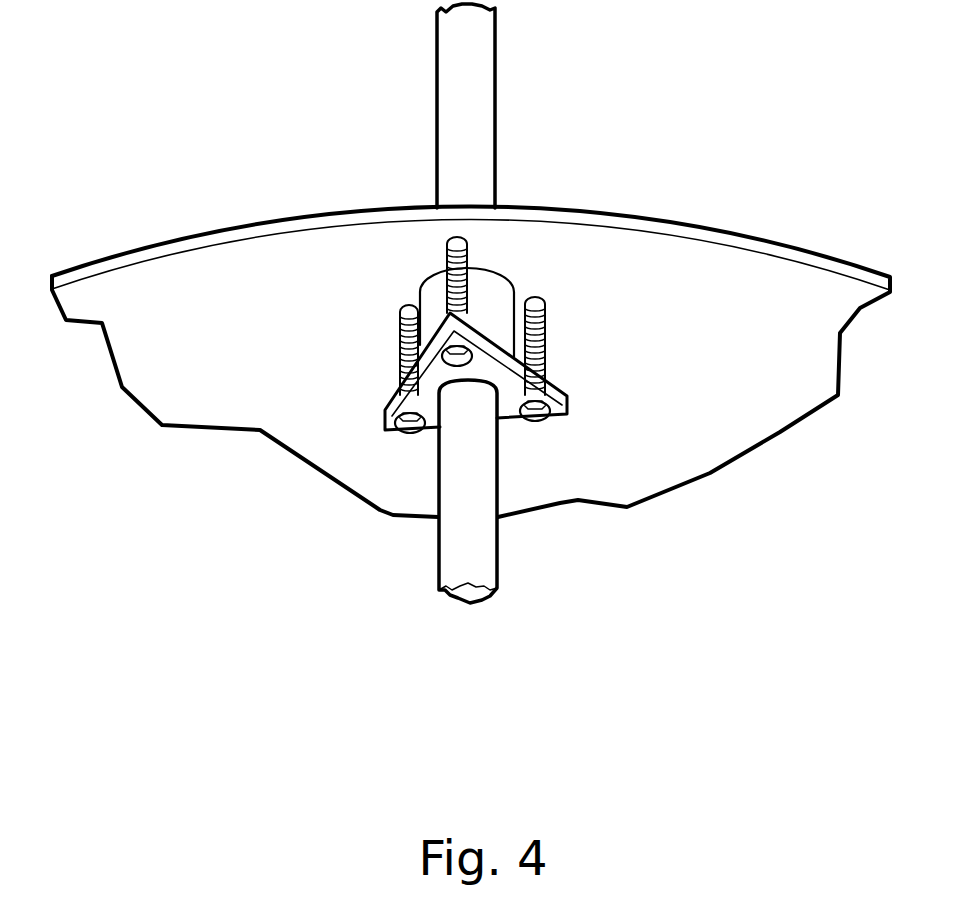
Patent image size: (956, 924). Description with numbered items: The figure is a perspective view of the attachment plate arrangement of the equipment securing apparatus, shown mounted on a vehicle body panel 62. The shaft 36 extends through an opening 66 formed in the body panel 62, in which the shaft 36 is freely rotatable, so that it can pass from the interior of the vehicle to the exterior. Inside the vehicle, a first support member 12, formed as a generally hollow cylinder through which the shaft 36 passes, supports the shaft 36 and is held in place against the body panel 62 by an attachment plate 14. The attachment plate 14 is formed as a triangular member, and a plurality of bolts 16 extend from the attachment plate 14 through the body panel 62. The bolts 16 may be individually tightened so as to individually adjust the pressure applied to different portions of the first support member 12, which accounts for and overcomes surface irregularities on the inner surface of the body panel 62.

The first support member 12 is at (493, 310).
The attachment plate 14 is at (507, 410).
The bolts 16 is at (400, 345).
The shaft 36 is at (468, 110).
The vehicle body panel 62 is at (233, 223).
The opening 66 is at (485, 262).